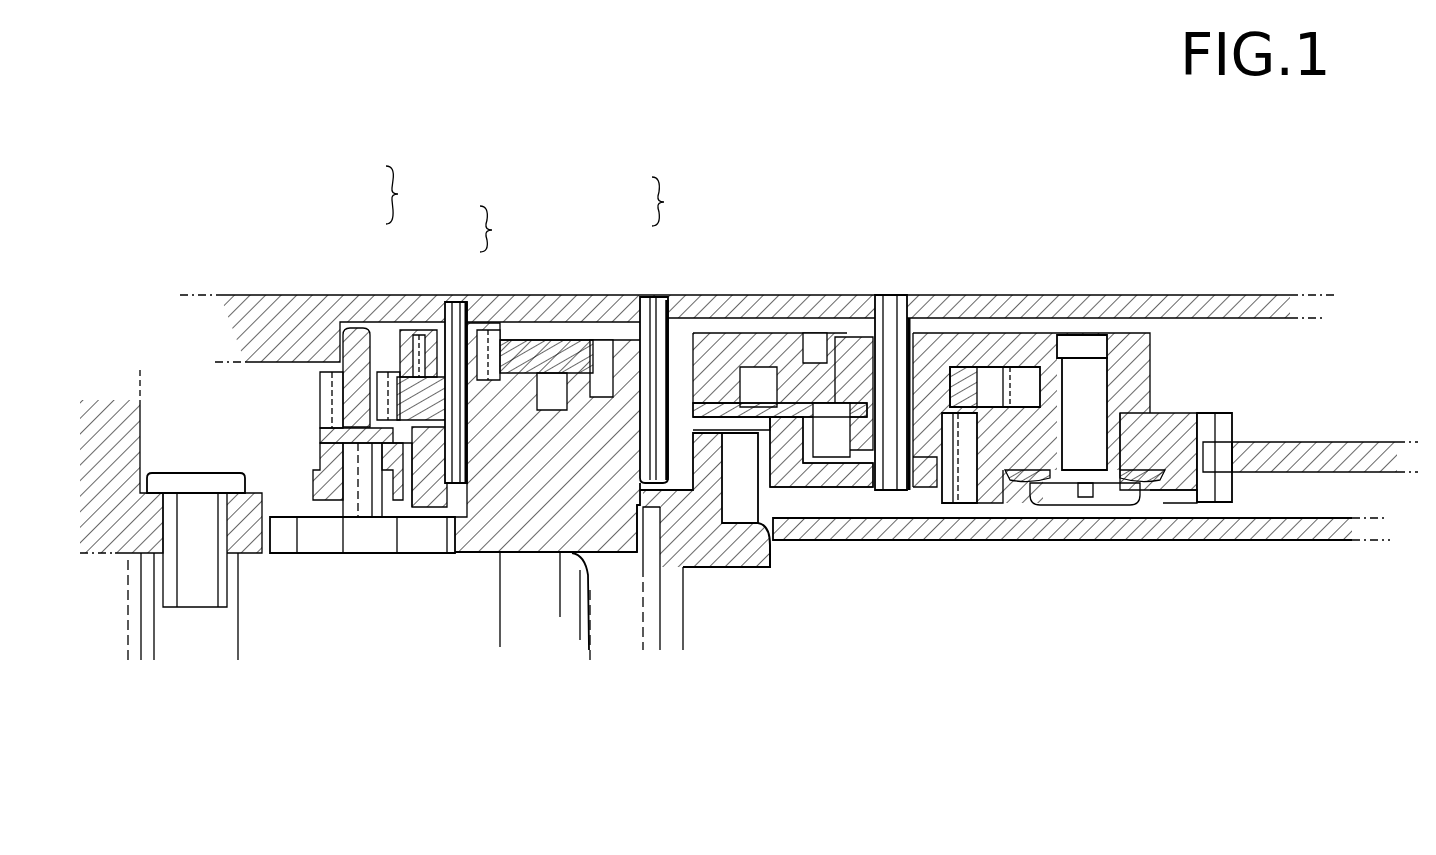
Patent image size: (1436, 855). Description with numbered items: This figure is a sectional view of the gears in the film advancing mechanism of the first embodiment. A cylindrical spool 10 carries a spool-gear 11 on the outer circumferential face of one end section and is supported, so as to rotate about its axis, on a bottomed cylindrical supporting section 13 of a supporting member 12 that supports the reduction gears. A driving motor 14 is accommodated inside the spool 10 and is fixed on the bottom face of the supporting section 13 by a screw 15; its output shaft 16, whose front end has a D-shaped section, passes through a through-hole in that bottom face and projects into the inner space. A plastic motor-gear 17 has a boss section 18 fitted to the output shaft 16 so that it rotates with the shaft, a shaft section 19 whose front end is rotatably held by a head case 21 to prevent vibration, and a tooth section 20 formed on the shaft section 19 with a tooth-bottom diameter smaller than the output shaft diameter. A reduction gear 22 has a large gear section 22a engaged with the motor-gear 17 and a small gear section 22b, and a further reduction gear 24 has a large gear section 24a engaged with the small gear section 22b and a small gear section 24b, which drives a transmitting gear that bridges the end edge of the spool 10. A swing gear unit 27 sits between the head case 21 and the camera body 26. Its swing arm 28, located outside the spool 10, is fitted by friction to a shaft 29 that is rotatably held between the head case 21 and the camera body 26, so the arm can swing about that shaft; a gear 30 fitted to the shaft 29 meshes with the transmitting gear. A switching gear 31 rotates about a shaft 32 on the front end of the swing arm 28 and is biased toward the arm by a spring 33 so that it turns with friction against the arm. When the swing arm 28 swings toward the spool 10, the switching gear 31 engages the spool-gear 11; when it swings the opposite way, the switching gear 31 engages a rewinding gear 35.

The spool 10 is at (425, 510).
The spool-gear 11 is at (734, 511).
The supporting member 12 is at (664, 464).
The supporting section 13 is at (510, 328).
The driving motor 14 is at (464, 617).
The screw 15 is at (204, 405).
The output shaft 16 is at (316, 360).
The motor-gear 17 is at (406, 195).
The boss section 18 is at (361, 285).
The shaft section 19 is at (356, 313).
The tooth section 20 is at (362, 384).
The head case 21 is at (310, 301).
The reduction gear 22 is at (504, 229).
The large gear section 22a is at (441, 324).
The small gear section 22b is at (436, 288).
The reduction gear 24 is at (680, 201).
The large gear section 24a is at (629, 328).
The small gear section 24b is at (722, 308).
The camera body 26 is at (1081, 562).
The swing gear unit 27 is at (1050, 196).
The swing arm 28 is at (1031, 350).
The shaft 29 is at (910, 344).
The gear 30 is at (821, 342).
The switching gear 31 is at (1176, 347).
The shaft 32 is at (1099, 348).
The spring 33 is at (1105, 537).
The rewinding gear 35 is at (1325, 331).